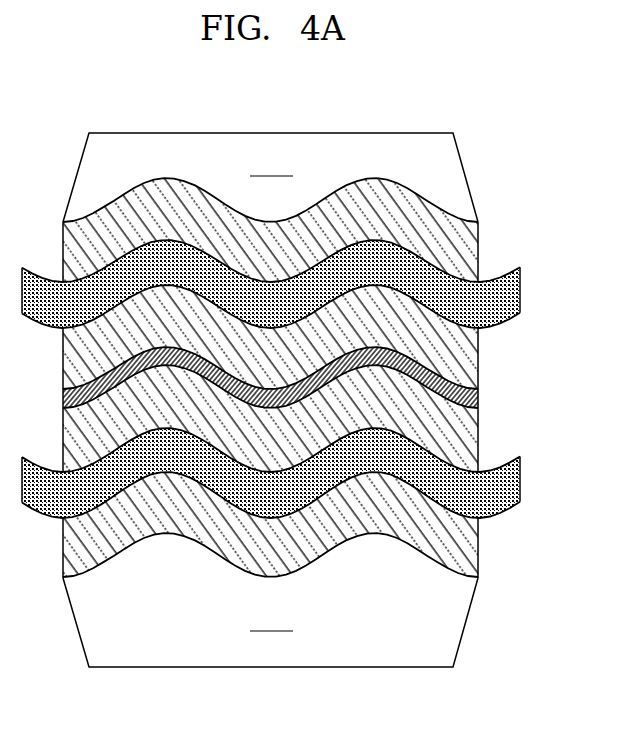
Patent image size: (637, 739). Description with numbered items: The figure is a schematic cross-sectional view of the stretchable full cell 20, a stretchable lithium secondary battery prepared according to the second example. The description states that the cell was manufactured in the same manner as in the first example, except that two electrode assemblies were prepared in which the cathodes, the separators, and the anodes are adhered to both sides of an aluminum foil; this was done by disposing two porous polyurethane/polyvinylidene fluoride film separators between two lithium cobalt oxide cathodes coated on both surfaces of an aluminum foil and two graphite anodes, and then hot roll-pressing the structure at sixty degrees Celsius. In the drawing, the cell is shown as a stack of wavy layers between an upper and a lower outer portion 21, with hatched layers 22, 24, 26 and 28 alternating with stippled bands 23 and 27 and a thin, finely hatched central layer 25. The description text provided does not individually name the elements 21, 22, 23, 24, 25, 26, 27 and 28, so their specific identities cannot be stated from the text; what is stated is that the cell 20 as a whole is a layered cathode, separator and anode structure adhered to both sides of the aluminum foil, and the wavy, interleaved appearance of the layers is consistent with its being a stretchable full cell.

The stretchable full cell 20 is at (462, 86).
The substrate 21 is at (462, 160).
The first semiconductor layer 22 is at (462, 242).
The first electrode layer 23 is at (512, 292).
The second semiconductor layer 24 is at (467, 357).
The active layer 25 is at (478, 402).
The third semiconductor layer 26 is at (296, 532).
The second electrode layer 27 is at (508, 478).
The fourth semiconductor layer 28 is at (463, 540).